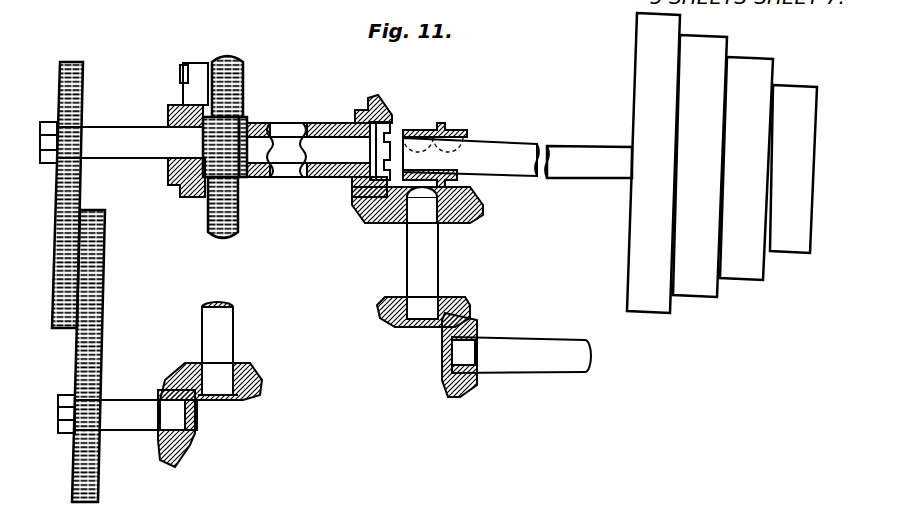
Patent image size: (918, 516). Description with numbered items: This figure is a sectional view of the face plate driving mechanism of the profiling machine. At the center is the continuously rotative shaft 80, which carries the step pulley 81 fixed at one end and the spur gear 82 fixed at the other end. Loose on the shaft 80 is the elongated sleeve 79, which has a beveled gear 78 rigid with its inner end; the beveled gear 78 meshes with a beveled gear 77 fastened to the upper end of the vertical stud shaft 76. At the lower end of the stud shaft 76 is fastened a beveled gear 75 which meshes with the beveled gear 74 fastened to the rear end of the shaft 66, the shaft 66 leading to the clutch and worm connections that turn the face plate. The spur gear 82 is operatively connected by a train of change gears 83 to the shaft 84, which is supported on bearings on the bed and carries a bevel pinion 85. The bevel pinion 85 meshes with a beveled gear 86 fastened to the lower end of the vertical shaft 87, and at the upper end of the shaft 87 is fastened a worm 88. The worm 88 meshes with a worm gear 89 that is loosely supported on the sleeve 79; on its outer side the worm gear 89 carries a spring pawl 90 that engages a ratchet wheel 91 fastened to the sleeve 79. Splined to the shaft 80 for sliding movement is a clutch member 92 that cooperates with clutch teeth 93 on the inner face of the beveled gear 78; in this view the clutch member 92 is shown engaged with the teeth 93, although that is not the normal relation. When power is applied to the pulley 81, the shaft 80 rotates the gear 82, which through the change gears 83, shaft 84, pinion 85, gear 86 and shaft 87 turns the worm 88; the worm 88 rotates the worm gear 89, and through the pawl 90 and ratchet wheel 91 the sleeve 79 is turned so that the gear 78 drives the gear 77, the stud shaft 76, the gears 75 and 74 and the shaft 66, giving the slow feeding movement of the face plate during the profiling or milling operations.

The shaft 66 is at (521, 355).
The beveled gear 74 is at (448, 392).
The beveled gear 75 is at (380, 310).
The stud shaft 76 is at (423, 265).
The beveled gear 77 is at (480, 208).
The beveled gear 78 is at (368, 103).
The elongated sleeve 79 is at (283, 175).
The shaft 80 is at (205, 149).
The step pulley 81 is at (676, 163).
The spur gear 82 is at (72, 60).
The train of change gears 83 is at (72, 330).
The shaft 84 is at (115, 417).
The bevel pinion 85 is at (178, 453).
The beveled gear 86 is at (257, 382).
The shaft 87 is at (220, 330).
The worm 88 is at (227, 143).
The worm gear 89 is at (227, 53).
The spring pawl 90 is at (195, 97).
The ratchet wheel 91 is at (190, 197).
The clutch member 92 is at (413, 125).
The clutch teeth 93 is at (378, 110).